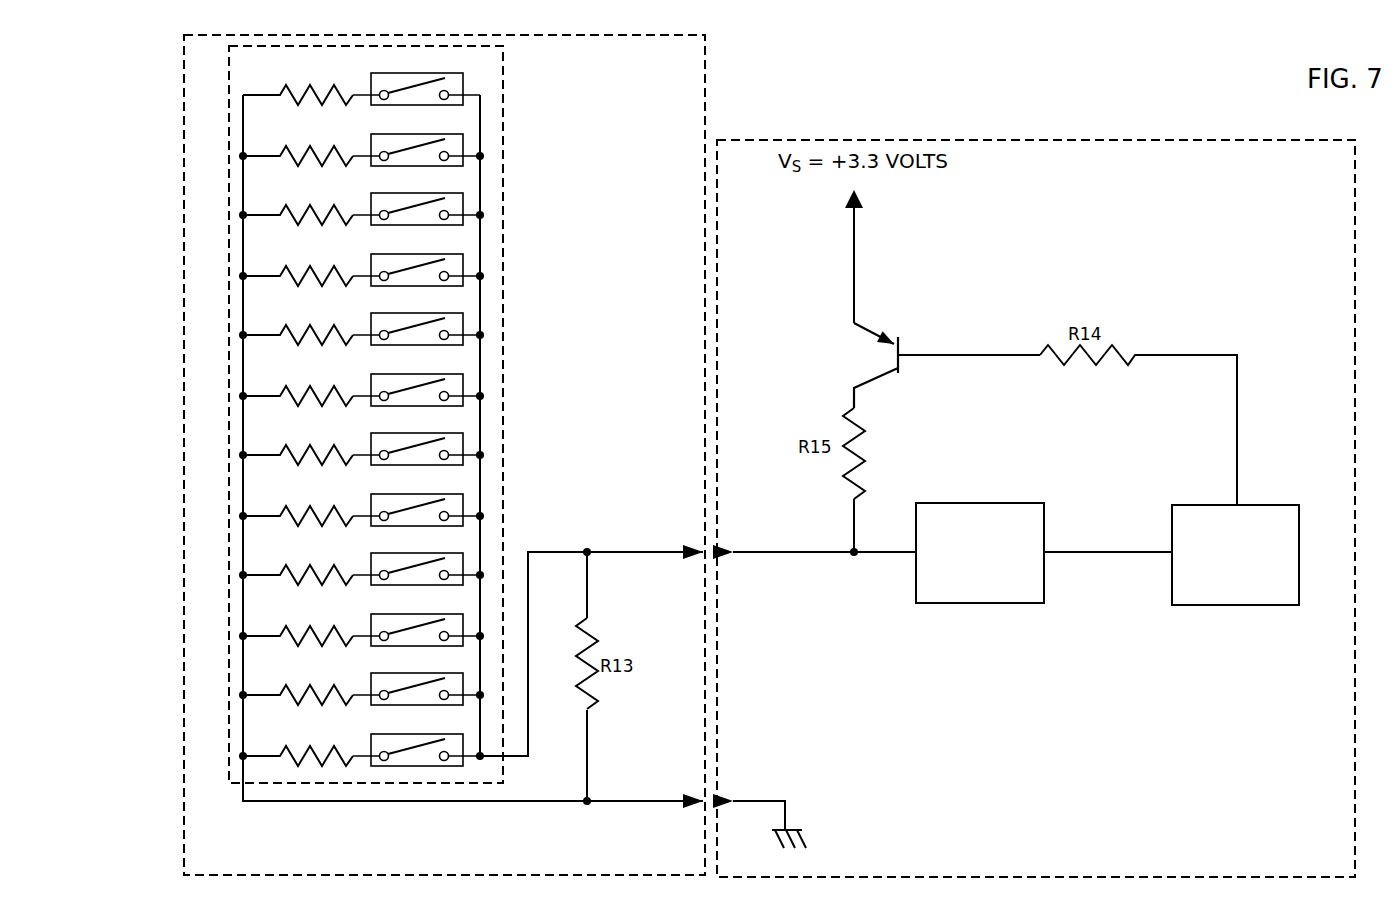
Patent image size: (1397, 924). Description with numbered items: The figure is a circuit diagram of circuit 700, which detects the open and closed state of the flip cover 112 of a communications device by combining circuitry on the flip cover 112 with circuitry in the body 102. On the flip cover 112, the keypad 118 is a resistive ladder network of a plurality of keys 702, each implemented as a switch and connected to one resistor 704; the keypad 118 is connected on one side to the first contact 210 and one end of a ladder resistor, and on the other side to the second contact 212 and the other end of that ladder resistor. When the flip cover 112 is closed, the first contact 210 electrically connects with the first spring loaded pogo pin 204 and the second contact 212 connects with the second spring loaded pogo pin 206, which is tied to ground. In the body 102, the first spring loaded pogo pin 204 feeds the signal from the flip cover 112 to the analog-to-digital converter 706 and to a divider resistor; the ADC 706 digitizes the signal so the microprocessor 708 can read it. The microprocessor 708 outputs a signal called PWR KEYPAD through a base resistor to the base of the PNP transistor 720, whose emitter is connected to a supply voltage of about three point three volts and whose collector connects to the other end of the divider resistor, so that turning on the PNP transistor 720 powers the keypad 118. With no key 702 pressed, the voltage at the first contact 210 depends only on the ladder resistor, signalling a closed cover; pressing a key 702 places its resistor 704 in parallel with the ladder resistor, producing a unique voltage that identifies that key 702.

The body 102 is at (1190, 141).
The flip cover 112 is at (708, 64).
The keypad 118 is at (505, 158).
The first spring loaded pogo pin 204 is at (744, 550).
The second spring loaded pogo pin 206 is at (744, 800).
The first contact 210 is at (681, 548).
The second contact 212 is at (681, 797).
The circuit 700 is at (1080, 92).
The key 702 is at (416, 410).
The resistor 704 is at (298, 415).
The analog-to-digital converter (ADC) 706 is at (985, 503).
The microprocessor 708 is at (1264, 505).
The PNP transistor 720 is at (863, 329).